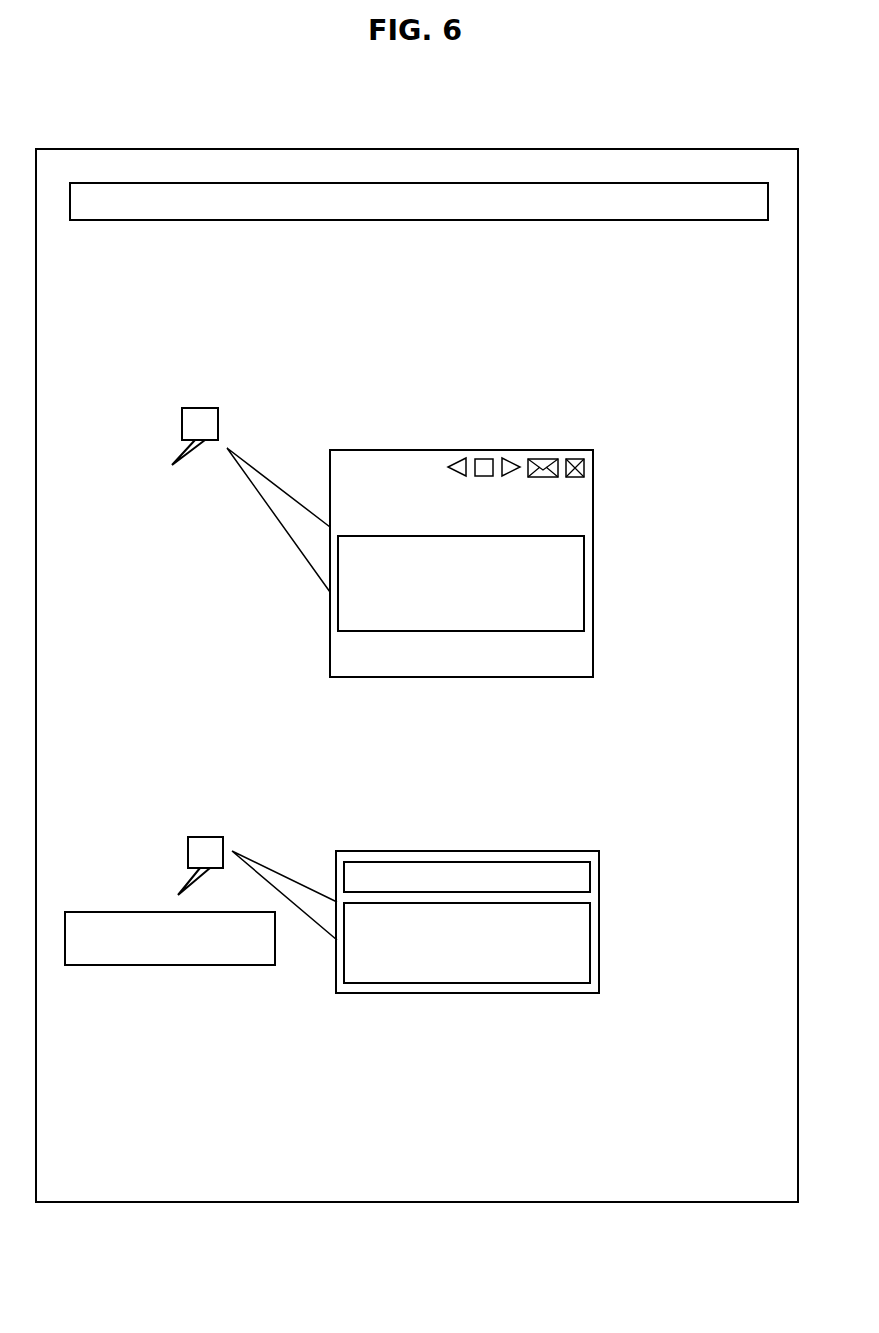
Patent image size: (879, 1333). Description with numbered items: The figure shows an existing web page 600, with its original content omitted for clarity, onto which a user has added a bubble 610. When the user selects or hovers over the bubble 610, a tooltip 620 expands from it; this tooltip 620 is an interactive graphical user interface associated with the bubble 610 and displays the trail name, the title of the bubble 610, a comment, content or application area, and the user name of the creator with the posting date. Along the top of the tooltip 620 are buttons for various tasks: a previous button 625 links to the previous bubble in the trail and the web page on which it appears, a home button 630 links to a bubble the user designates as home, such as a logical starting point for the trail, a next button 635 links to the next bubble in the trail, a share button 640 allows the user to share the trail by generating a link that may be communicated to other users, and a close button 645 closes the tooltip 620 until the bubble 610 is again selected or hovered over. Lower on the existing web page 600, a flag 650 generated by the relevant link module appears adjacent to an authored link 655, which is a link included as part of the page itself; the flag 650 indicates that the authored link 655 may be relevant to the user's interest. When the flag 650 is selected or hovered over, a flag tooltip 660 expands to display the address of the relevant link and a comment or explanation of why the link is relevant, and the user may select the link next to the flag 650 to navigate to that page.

The existing web page 600 is at (417, 675).
The bubble 610 is at (223, 370).
The tooltip 620 is at (593, 580).
The previous button 625 is at (458, 459).
The home button 630 is at (483, 458).
The next button 635 is at (510, 459).
The share button 640 is at (543, 459).
The close button 645 is at (582, 477).
The flag 650 is at (205, 837).
The authored link 655 is at (170, 938).
The flag tooltip 660 is at (599, 928).